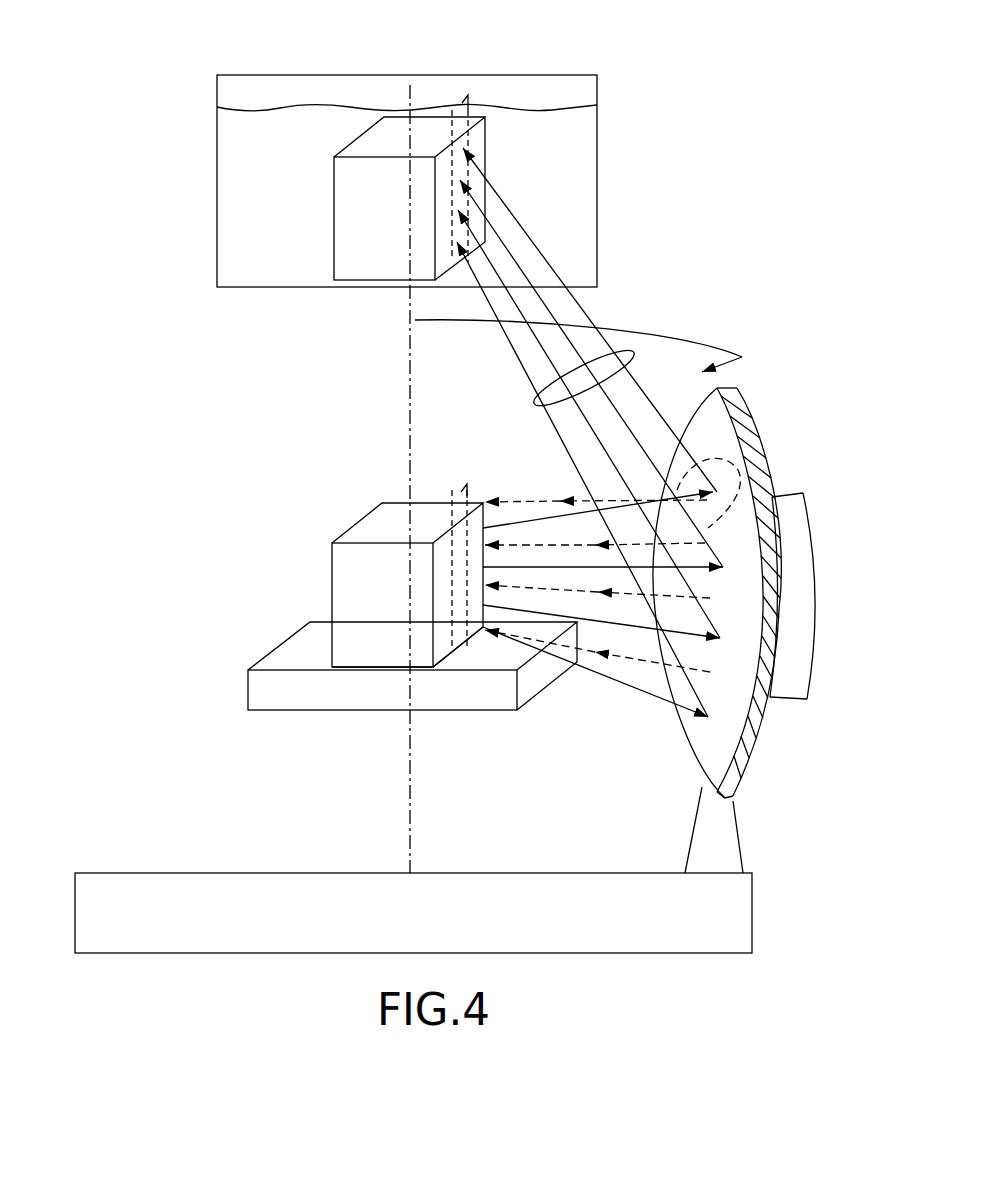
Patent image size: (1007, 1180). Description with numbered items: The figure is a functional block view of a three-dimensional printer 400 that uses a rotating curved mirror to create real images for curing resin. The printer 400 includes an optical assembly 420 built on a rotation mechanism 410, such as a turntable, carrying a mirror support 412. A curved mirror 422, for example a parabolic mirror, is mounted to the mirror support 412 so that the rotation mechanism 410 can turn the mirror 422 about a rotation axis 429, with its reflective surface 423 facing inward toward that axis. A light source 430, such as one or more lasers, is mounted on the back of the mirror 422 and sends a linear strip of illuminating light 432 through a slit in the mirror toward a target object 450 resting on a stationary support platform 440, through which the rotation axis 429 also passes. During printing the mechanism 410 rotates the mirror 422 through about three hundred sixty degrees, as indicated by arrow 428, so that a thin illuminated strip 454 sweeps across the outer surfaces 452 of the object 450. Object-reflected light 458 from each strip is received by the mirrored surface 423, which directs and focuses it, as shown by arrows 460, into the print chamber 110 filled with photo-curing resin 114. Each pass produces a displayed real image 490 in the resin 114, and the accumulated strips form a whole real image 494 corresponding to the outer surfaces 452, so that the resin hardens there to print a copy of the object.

The 3D printer 400 is at (118, 108).
The print chamber 110 is at (576, 72).
The photo-curing resin 114 is at (580, 108).
The displayed real image 490 is at (486, 139).
The whole real image 494 is at (333, 262).
The rotation axis 429 is at (415, 321).
The rotation arrow 428 is at (742, 357).
The strip of illuminating light 432 is at (763, 490).
The optical assembly 420 is at (796, 592).
The directed light arrows 460 is at (545, 400).
The illuminated strip 454 is at (455, 508).
The 3D object 450 is at (326, 571).
The outer surfaces 452 is at (342, 636).
The support platform 440 is at (248, 690).
The object-reflected light 458 is at (623, 630).
The reflective surface 423 is at (690, 745).
The curved mirror 422 is at (676, 782).
The light source 430 is at (800, 702).
The mirror support 412 is at (743, 835).
The rotation mechanism 410 is at (752, 893).